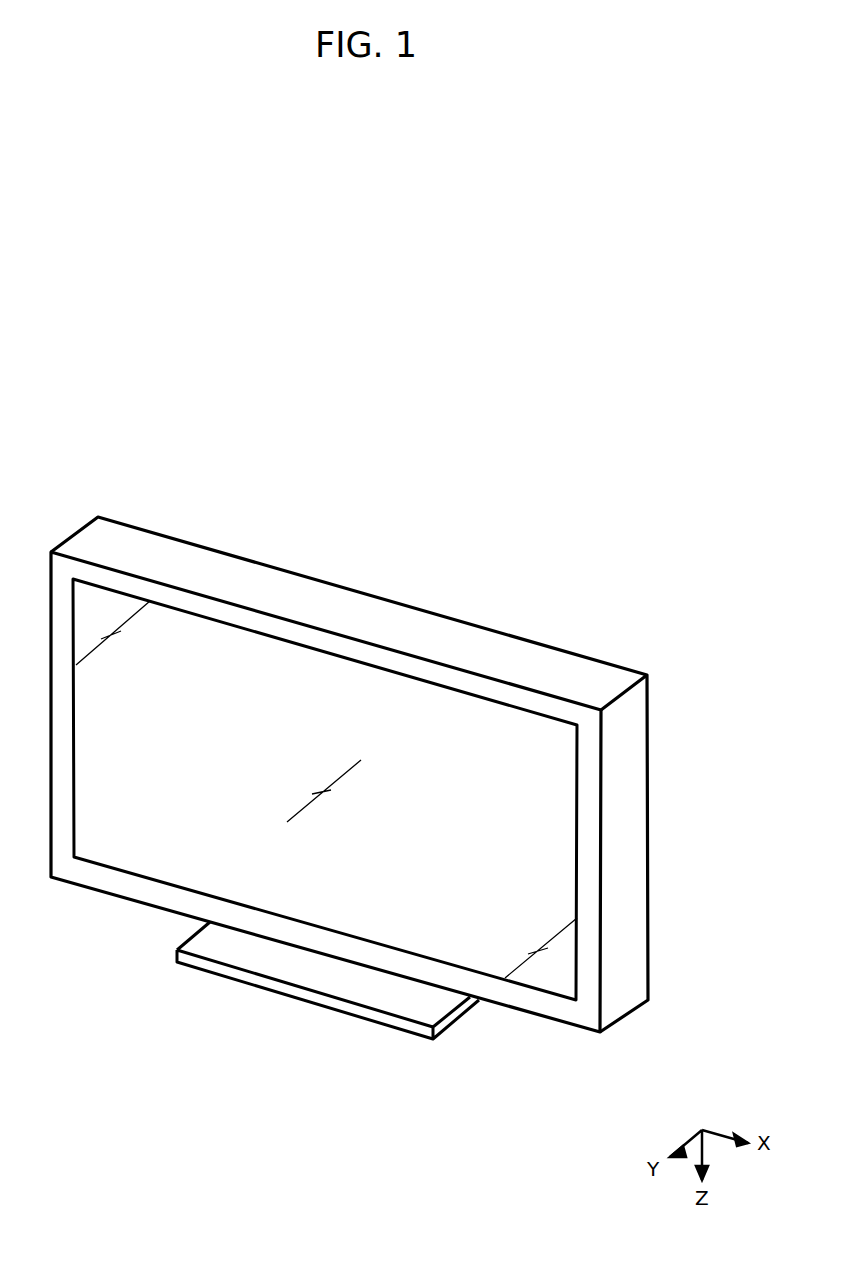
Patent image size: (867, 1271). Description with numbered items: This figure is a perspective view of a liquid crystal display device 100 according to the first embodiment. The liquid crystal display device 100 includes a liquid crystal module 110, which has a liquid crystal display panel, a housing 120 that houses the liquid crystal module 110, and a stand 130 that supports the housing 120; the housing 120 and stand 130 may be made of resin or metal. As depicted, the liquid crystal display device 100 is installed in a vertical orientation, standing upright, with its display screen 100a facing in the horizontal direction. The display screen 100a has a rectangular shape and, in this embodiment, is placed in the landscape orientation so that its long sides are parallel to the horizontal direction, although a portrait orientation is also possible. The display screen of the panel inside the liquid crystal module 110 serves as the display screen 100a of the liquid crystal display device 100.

The liquid crystal display device 100 is at (366, 765).
The display screen 100a is at (400, 713).
The liquid crystal module 110 is at (178, 847).
The housing 120 is at (557, 1007).
The stand 130 is at (375, 1000).